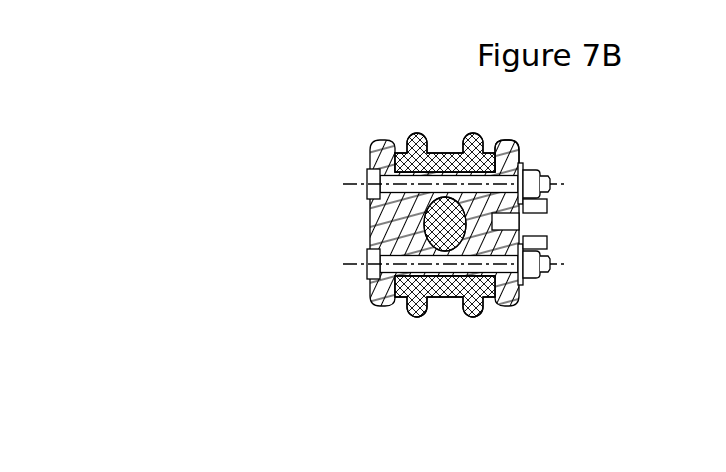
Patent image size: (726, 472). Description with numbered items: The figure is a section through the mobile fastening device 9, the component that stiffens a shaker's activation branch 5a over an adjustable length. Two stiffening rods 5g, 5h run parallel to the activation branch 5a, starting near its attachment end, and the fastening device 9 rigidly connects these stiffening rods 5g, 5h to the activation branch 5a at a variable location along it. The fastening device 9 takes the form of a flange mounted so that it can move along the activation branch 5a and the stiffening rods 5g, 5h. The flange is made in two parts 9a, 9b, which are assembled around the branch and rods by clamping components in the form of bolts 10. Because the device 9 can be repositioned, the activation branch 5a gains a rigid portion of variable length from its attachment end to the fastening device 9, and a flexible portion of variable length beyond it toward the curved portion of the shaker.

The mobile fastening device 9 is at (325, 176).
The first flange part 9a is at (388, 229).
The second flange part 9b is at (522, 224).
The activation branch 5a is at (517, 151).
The stiffening rod 5g is at (442, 152).
The stiffening rod 5h is at (455, 297).
The bolts 10 is at (547, 199).